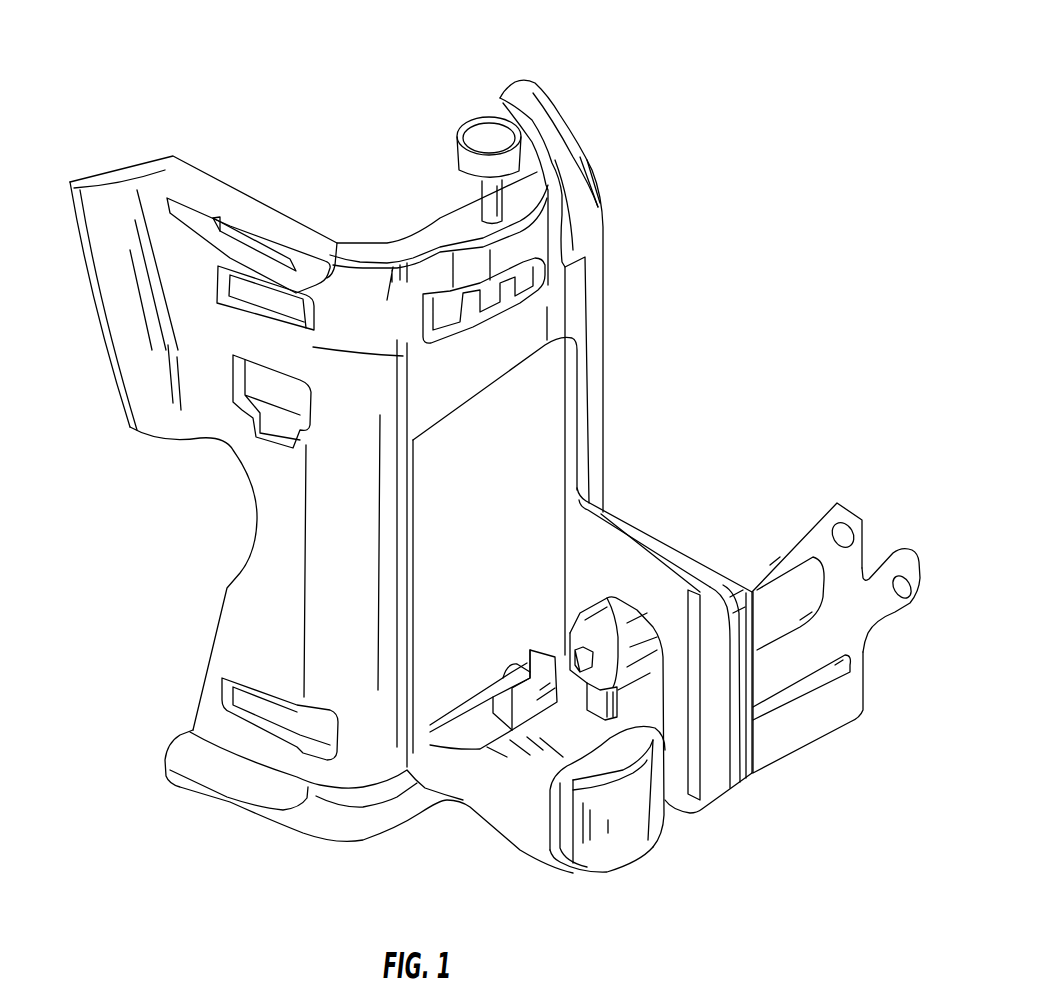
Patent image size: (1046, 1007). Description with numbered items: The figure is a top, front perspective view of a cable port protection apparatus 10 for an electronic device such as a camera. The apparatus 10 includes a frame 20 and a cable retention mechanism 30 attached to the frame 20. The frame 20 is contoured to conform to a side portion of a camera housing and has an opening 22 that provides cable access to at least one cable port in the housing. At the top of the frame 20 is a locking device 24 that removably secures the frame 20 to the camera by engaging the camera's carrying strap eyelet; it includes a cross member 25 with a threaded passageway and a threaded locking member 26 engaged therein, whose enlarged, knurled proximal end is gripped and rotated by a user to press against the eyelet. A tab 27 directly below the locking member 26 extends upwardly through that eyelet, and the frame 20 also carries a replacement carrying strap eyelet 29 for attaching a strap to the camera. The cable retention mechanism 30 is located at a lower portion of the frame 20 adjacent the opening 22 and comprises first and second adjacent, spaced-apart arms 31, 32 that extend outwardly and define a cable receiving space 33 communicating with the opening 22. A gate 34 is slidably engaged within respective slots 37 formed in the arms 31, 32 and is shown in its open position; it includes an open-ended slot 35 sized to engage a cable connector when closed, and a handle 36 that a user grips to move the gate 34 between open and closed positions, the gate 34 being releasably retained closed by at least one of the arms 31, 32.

The cable port protection apparatus 10 is at (640, 88).
The frame 20 is at (600, 192).
The opening 22 is at (570, 393).
The locking device 24 is at (407, 153).
The cross member 25 is at (440, 243).
The threaded locking member 26 is at (476, 122).
The tab 27 is at (470, 287).
The carrying strap eyelet 29 is at (250, 267).
The cable retention mechanism 30 is at (878, 518).
The first arm 31 is at (575, 826).
The second arm 32 is at (730, 783).
The cable receiving space 33 is at (683, 821).
The gate 34 is at (853, 683).
The open-ended slot 35 is at (770, 587).
The handle 36 is at (912, 558).
The slots 37 is at (647, 785).